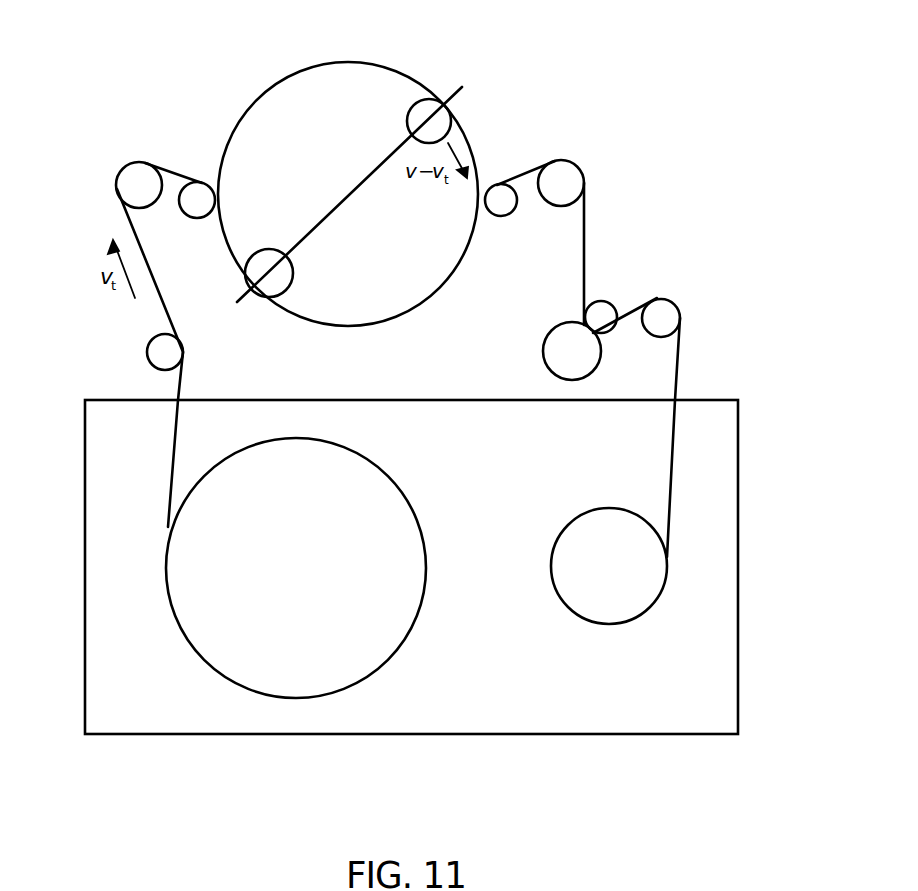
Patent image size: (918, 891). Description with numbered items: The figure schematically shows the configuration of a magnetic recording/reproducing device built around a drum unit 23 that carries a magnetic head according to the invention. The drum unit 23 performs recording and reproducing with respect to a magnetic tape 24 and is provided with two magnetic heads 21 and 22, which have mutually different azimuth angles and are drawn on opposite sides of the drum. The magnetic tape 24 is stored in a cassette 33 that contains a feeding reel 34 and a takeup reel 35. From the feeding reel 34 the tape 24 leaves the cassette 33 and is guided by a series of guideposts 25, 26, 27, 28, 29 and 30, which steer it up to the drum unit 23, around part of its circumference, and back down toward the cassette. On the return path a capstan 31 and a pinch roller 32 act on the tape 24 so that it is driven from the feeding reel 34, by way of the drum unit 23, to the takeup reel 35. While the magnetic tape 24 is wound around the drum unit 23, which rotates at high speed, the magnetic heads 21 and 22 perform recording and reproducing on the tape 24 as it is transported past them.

The magnetic head 21 is at (270, 283).
The magnetic head 22 is at (425, 107).
The drum unit 23 is at (300, 65).
The magnetic tape 24 is at (584, 245).
The guidepost 25 is at (150, 353).
The guidepost 26 is at (135, 175).
The guidepost 27 is at (198, 190).
The guidepost 28 is at (500, 192).
The guidepost 29 is at (560, 176).
The guidepost 30 is at (666, 313).
The capstan 31 is at (603, 312).
The pinch roller 32 is at (558, 352).
The cassette 33 is at (738, 563).
The feeding reel 34 is at (296, 665).
The takeup reel 35 is at (640, 595).